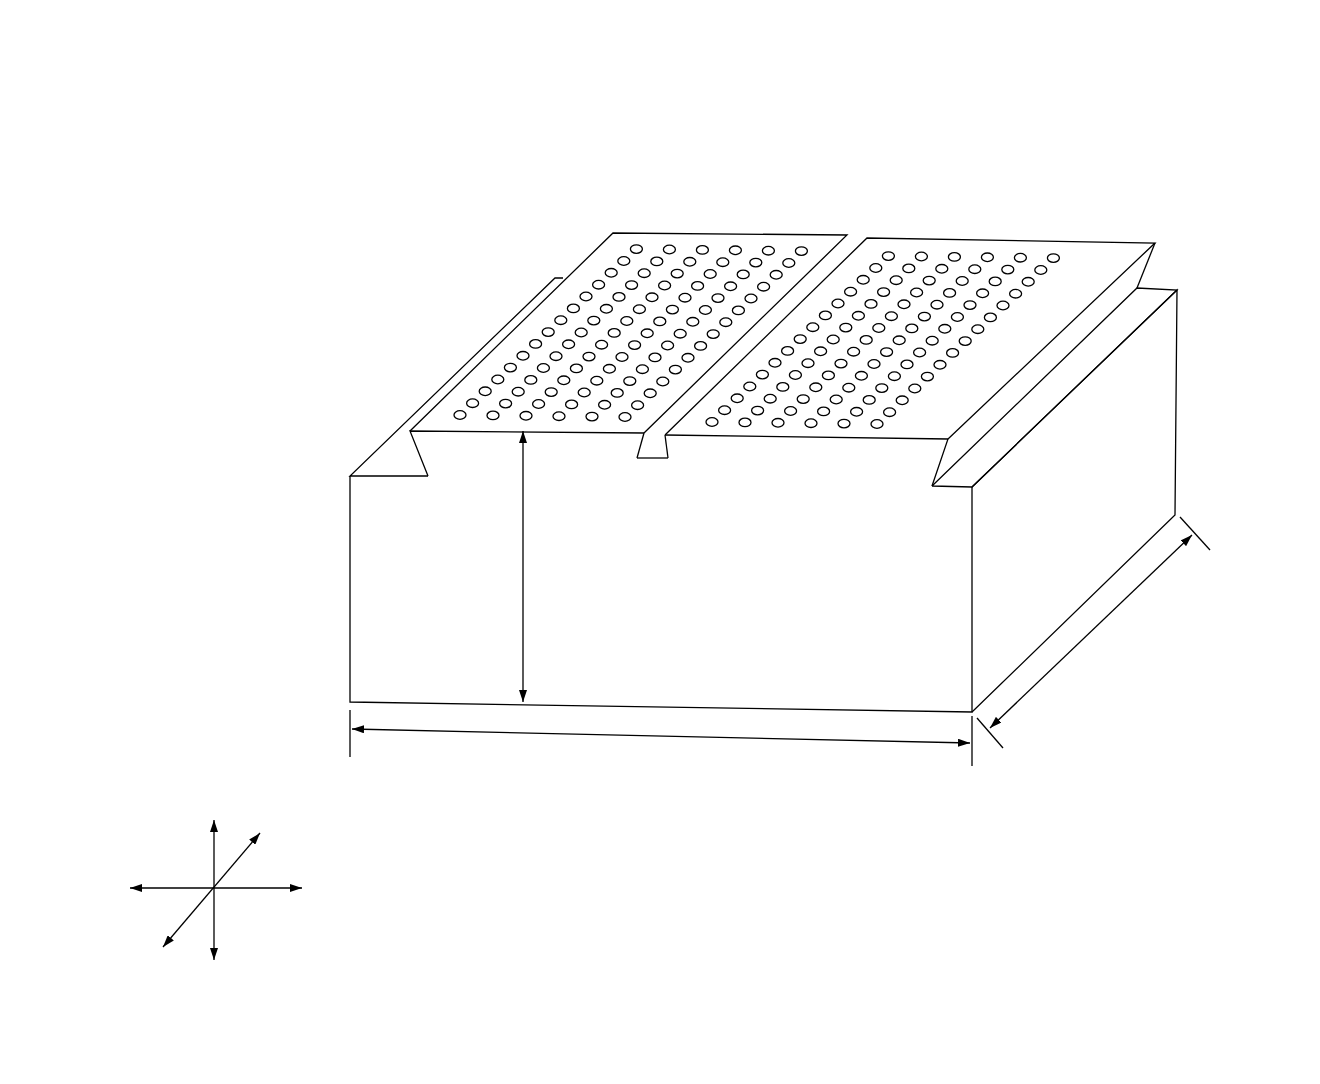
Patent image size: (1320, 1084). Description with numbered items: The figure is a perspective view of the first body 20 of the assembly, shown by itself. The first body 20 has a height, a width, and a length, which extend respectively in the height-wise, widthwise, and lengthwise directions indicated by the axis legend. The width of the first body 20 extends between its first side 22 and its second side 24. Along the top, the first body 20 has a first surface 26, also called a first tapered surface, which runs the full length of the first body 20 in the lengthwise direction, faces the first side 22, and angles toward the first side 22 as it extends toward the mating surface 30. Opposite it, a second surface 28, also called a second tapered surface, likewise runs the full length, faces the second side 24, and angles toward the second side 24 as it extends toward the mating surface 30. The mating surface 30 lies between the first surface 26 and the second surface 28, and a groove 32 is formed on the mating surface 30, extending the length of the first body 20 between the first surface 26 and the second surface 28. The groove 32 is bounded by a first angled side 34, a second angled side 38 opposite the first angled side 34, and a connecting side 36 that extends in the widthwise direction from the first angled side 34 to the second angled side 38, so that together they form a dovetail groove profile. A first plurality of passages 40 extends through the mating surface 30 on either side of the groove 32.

The first body 20 is at (704, 500).
The first side 22 is at (1053, 495).
The second side 24 is at (350, 555).
The first surface 26 is at (1133, 273).
The second surface 28 is at (417, 450).
The mating surface 30 is at (822, 247).
The groove 32 is at (657, 460).
The first angled side 34 is at (667, 447).
The connecting side 36 is at (643, 458).
The second angled side 38 is at (638, 447).
The first plurality of passages 40 is at (673, 245).